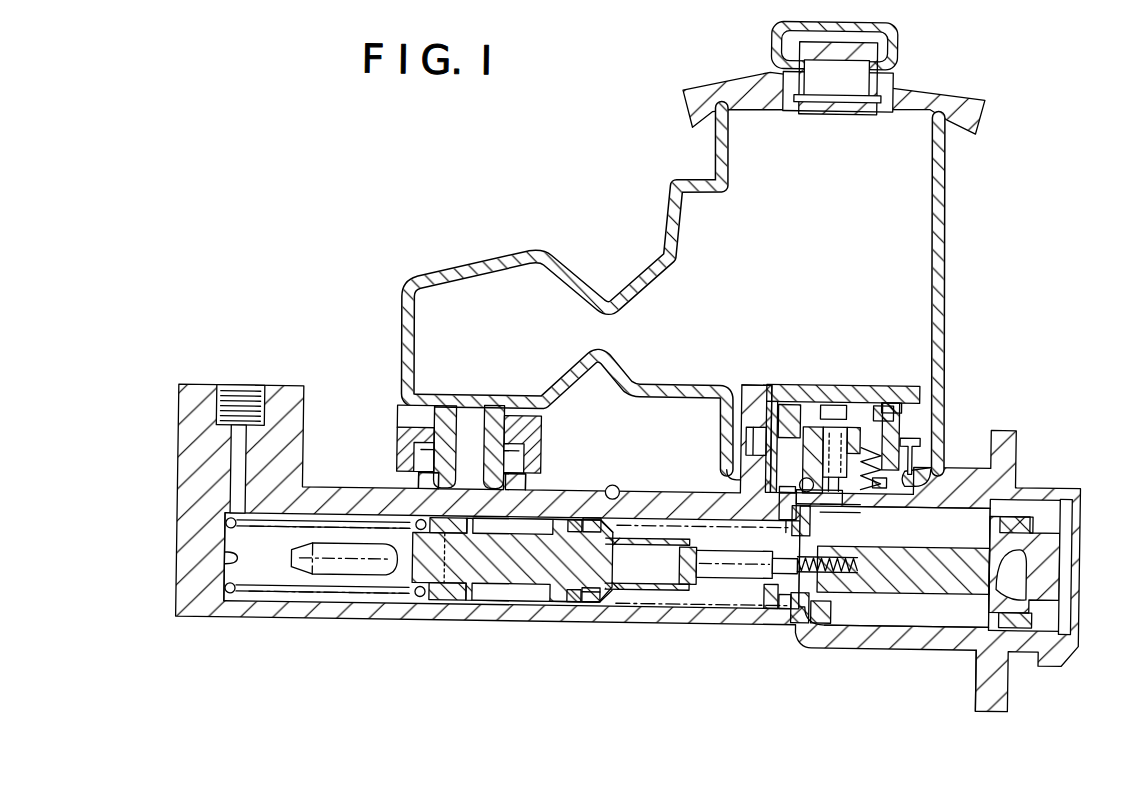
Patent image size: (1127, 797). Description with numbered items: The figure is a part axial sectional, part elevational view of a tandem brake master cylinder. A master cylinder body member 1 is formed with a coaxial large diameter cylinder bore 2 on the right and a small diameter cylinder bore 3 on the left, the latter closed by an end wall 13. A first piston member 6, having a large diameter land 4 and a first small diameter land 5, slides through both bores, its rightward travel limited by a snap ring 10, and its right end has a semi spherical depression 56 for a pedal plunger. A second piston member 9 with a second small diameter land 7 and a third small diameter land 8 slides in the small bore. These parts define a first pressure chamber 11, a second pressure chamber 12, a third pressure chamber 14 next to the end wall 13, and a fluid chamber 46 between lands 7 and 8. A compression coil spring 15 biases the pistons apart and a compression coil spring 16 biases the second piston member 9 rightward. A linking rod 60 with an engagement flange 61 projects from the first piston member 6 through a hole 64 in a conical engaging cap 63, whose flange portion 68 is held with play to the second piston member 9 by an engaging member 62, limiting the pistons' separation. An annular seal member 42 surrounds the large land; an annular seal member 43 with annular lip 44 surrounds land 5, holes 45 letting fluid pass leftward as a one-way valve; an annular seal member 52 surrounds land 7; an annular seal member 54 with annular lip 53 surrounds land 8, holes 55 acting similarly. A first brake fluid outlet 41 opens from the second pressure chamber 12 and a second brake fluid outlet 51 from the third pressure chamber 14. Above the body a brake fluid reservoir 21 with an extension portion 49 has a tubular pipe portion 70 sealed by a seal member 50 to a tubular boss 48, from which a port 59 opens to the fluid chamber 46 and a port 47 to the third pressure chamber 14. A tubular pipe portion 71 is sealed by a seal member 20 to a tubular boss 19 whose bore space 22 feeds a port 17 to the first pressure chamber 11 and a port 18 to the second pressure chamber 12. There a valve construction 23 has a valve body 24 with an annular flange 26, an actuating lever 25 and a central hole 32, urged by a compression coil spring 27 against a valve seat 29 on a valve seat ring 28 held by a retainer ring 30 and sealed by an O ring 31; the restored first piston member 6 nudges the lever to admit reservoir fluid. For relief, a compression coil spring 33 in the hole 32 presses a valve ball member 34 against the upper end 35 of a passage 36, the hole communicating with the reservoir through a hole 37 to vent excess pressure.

The master cylinder body member 1 is at (550, 622).
The large diameter cylinder bore 2 is at (895, 625).
The small diameter cylinder bore 3 is at (534, 603).
The large diameter land 4 is at (1060, 527).
The first small diameter land 5 is at (807, 620).
The first piston member 6 is at (896, 586).
The second small diameter land 7 is at (574, 603).
The third small diameter land 8 is at (468, 603).
The second piston member 9 is at (512, 559).
The snap ring 10 is at (1066, 621).
The first pressure chamber 11 is at (955, 635).
The second pressure chamber 12 is at (722, 606).
The end wall 13 is at (232, 562).
The third pressure chamber 14 is at (274, 585).
The compression coil spring 15 is at (622, 594).
The compression coil spring 16 is at (348, 597).
The port 17 is at (836, 503).
The port 18 is at (779, 516).
The tubular boss 19 is at (746, 392).
The seal member 20 is at (745, 431).
The brake fluid reservoir 21 is at (943, 276).
The bore space 22 is at (789, 468).
The valve construction 23 is at (824, 424).
The valve body 24 is at (796, 482).
The actuating lever 25 is at (830, 515).
The annular flange 26 is at (875, 412).
The compression coil spring 27 is at (876, 476).
The valve seat ring 28 is at (806, 424).
The valve seat 29 is at (783, 402).
The retainer ring 30 is at (918, 390).
The O ring 31 is at (918, 405).
The central hole 32 is at (824, 430).
The compression coil spring 33 is at (846, 432).
The valve ball member 34 is at (910, 452).
The upper end of passage 35 is at (783, 490).
The passage 36 is at (890, 505).
The hole 37 is at (816, 437).
The first brake fluid outlet 41 is at (611, 492).
The annular seal member 42 is at (1024, 622).
The annular seal member 43 is at (754, 606).
The annular lip 44 is at (792, 622).
The holes 45 is at (832, 622).
The fluid chamber 46 is at (540, 527).
The port 47 is at (428, 481).
The tubular boss 48 is at (413, 443).
The extension portion 49 is at (424, 313).
The seal member 50 is at (404, 428).
The second brake fluid outlet 51 is at (240, 478).
The annular seal member 52 is at (594, 603).
The annular lip 53 is at (432, 603).
The annular seal member 54 is at (457, 604).
The holes 55 is at (497, 603).
The semi spherical depression 56 is at (1020, 566).
The port 59 is at (466, 490).
The linking rod 60 is at (738, 606).
The engagement flange 61 is at (662, 573).
The engaging member 62 is at (610, 606).
The conical engaging cap 63 is at (668, 592).
The hole 64 is at (688, 559).
The flange portion 68 is at (602, 614).
The tubular pipe portion 70 is at (524, 446).
The tubular pipe portion 71 is at (732, 454).